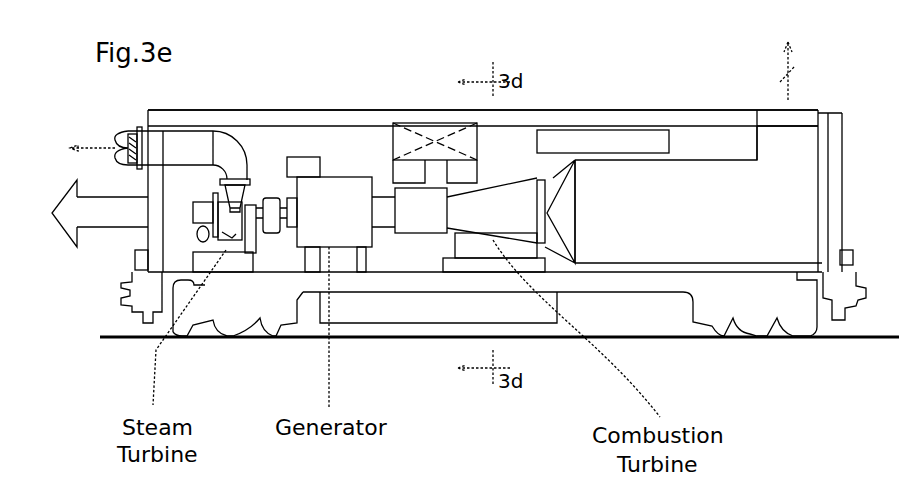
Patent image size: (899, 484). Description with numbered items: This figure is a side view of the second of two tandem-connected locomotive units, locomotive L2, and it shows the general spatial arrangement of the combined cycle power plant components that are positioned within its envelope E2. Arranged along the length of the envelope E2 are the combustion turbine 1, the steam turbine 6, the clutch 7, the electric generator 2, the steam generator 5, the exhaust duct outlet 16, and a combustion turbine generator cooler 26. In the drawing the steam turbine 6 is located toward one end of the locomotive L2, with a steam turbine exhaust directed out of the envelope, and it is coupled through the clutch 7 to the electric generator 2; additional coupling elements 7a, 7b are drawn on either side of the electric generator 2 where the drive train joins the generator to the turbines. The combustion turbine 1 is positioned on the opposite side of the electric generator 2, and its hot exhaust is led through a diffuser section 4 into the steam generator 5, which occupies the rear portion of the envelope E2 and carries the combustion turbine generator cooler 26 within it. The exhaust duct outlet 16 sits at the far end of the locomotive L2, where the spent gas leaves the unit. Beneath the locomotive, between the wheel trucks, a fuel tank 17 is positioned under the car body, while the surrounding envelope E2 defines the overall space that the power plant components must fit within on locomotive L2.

The combustion turbine 1 is at (475, 210).
The electric generator 2 is at (338, 224).
The combustion turbine exhaust 4 is at (552, 172).
The steam generator 5 is at (718, 203).
The steam turbine 6 is at (148, 240).
The clutch 7 is at (272, 202).
The coupling 7a is at (378, 198).
The coupling 7b is at (278, 195).
The exhaust duct outlet 16 is at (760, 145).
The fuel tank 17 is at (420, 305).
The combustion turbine generator cooler 26 is at (620, 128).
The envelope E2 is at (398, 94).
The locomotive unit L2 is at (827, 82).